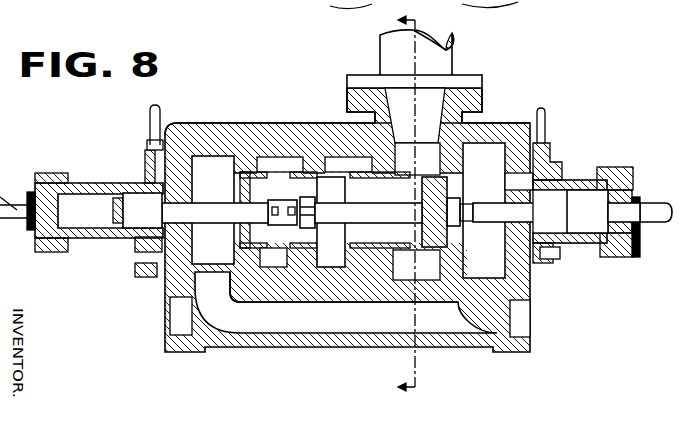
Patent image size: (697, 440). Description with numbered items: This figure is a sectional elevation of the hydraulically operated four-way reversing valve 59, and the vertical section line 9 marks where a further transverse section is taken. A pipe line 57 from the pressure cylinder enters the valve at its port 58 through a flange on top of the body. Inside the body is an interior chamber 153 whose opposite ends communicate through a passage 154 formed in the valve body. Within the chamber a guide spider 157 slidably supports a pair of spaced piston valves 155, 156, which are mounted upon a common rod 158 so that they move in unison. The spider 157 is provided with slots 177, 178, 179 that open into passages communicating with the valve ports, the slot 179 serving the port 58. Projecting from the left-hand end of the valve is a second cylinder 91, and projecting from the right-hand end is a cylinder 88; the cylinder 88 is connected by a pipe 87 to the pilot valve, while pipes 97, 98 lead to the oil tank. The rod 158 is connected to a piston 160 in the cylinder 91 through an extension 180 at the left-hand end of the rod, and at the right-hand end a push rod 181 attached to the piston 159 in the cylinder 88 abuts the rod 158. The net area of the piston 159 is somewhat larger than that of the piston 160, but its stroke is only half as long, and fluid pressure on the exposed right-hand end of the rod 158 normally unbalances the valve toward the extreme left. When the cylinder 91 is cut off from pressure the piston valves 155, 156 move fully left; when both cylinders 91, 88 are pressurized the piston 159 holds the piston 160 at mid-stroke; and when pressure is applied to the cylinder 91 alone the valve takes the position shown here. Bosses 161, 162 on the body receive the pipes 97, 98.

The section line 9 is at (398, 203).
The pipe line 57 is at (443, 57).
The port 58 is at (432, 110).
The hydraulically operated four-way reversing valve 59 is at (265, 127).
The pipe 87 is at (652, 207).
The cylinder 88 is at (573, 180).
The second cylinder 91 is at (88, 183).
The pipe 97 is at (545, 122).
The pipe 98 is at (155, 118).
The interior chamber 153 is at (208, 170).
The passage 154 is at (337, 323).
The piston valve 155 is at (313, 247).
The piston valve 156 is at (458, 293).
The guide spider 157 is at (252, 300).
The rod 158 is at (381, 250).
The piston 159 is at (590, 218).
The piston 160 is at (138, 213).
The boss 161 is at (550, 155).
The boss 162 is at (145, 157).
The slot 177 is at (280, 164).
The slot 178 is at (348, 164).
The slot 179 is at (417, 159).
The extension 180 is at (220, 215).
The push rod 181 is at (494, 215).